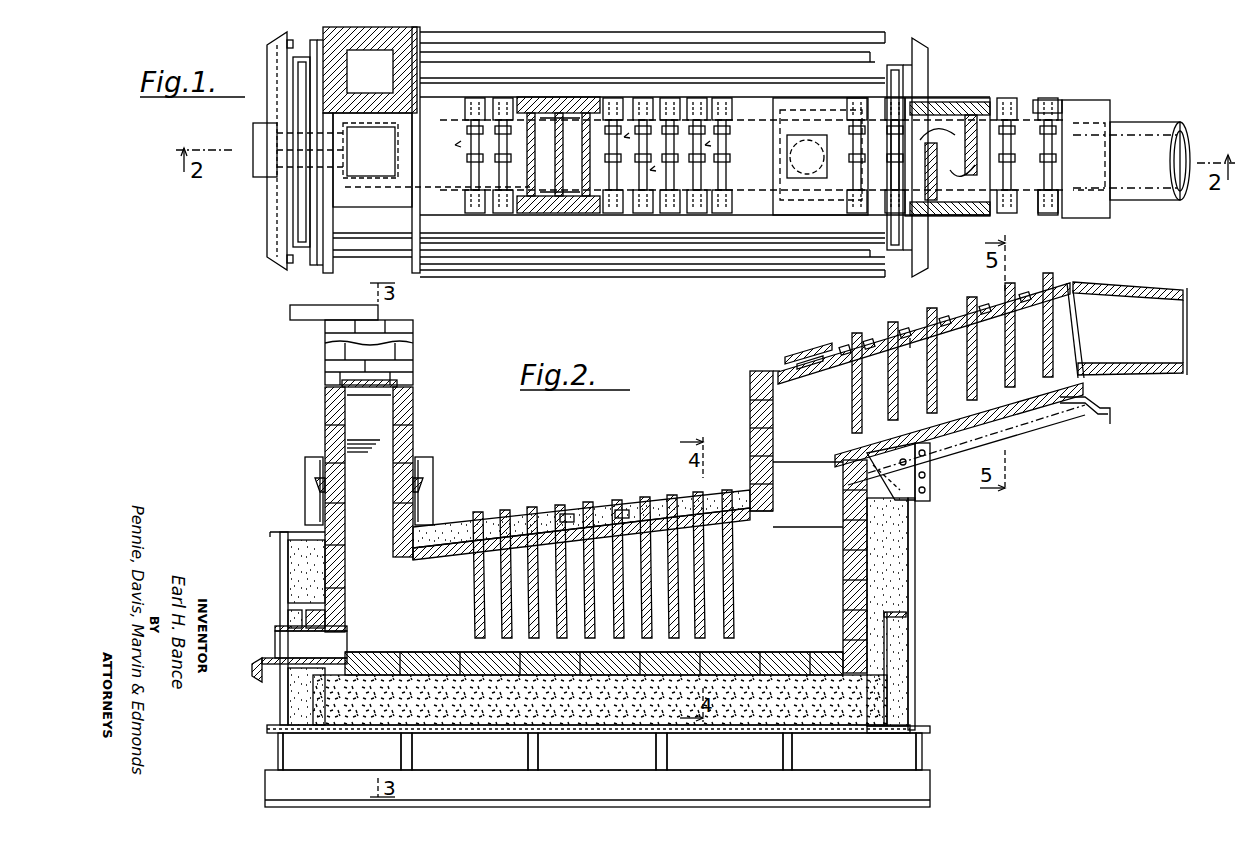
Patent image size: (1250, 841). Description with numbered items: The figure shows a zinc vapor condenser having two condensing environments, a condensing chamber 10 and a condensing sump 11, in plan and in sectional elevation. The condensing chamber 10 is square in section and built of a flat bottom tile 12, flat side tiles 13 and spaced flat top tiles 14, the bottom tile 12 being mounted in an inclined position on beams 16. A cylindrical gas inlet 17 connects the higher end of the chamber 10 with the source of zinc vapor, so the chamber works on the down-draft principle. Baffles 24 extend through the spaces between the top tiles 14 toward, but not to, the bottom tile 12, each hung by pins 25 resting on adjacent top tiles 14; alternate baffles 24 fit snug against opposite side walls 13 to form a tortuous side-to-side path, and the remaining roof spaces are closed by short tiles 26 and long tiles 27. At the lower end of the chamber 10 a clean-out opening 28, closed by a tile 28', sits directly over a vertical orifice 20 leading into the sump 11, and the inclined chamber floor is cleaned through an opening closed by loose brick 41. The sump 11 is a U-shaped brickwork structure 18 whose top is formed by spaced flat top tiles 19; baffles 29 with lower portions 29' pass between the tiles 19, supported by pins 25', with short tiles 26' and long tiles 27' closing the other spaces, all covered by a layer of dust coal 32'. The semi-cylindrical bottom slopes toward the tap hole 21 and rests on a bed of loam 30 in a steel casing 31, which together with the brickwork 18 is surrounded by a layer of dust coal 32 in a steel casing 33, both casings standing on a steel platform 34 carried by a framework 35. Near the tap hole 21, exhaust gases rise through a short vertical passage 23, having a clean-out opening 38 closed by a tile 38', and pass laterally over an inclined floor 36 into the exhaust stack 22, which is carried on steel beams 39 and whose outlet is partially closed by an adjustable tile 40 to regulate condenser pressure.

In FIG. 2, the condensing chamber 10 is at (801, 393).
In FIG. 1, the condensing sump 11 is at (550, 200).
In FIG. 2, the condensing sump 11 is at (594, 610).
In FIG. 1, the flat bottom tile 12 is at (950, 98).
In FIG. 2, the flat bottom tile 12 is at (1010, 410).
In FIG. 1, the flat side tiles 13 is at (938, 103).
In FIG. 1, the flat top tiles 14 is at (985, 200).
In FIG. 2, the flat top tiles 14 is at (911, 357).
In FIG. 2, the beams 16 is at (1058, 410).
In FIG. 1, the gas inlet 17 is at (1140, 130).
In FIG. 2, the gas inlet 17 is at (1140, 300).
In FIG. 1, the brickwork structure 18 is at (585, 105).
In FIG. 2, the brickwork structure 18 is at (745, 655).
In FIG. 1, the flat top tiles 19 is at (700, 205).
In FIG. 2, the flat top tiles 19 is at (598, 518).
In FIG. 2, the vertical orifice 20 is at (796, 494).
In FIG. 1, the tap hole 21 is at (290, 128).
In FIG. 2, the tap hole 21 is at (300, 640).
In FIG. 1, the exhaust stack 22 is at (385, 78).
In FIG. 2, the exhaust stack 22 is at (395, 353).
In FIG. 2, the vertical passage 23 is at (369, 460).
In FIG. 1, the baffles 24 is at (960, 105).
In FIG. 2, the baffles 24 is at (1010, 370).
In FIG. 1, the pins 25 is at (1038, 140).
In FIG. 2, the pins 25 is at (942, 306).
In FIG. 1, the pins 25' is at (496, 154).
In FIG. 2, the pins 25' is at (607, 491).
In FIG. 1, the short tiles 26 is at (1056, 88).
In FIG. 1, the short tiles 26' is at (605, 145).
In FIG. 1, the long tiles 27 is at (1060, 217).
In FIG. 1, the long tiles 27' is at (614, 163).
In FIG. 1, the clean-out opening 28 is at (810, 156).
In FIG. 2, the clean-out opening 28 is at (924, 342).
In FIG. 1, the tile 28' is at (788, 160).
In FIG. 2, the tile 28' is at (805, 343).
In FIG. 1, the baffles 29 is at (523, 145).
In FIG. 2, the baffles 29 is at (582, 564).
In FIG. 1, the lower portion 29' is at (493, 145).
In FIG. 2, the bed of loam 30 is at (845, 700).
In FIG. 1, the steel casing 31 is at (640, 245).
In FIG. 2, the steel casing 31 is at (890, 670).
In FIG. 2, the layer of dust coal 32 is at (917, 612).
In FIG. 2, the layer of dust coal 32' is at (581, 506).
In FIG. 1, the steel casing 33 is at (700, 262).
In FIG. 2, the steel casing 33 is at (915, 635).
In FIG. 2, the steel platform 34 is at (845, 738).
In FIG. 2, the framework 35 is at (925, 789).
In FIG. 2, the floor 36 is at (380, 442).
In FIG. 1, the clean-out opening 38 is at (372, 161).
In FIG. 2, the clean-out opening 38 is at (388, 505).
In FIG. 1, the tile 38' is at (370, 176).
In FIG. 2, the tile 38' is at (337, 386).
In FIG. 1, the steel beams 39 is at (325, 218).
In FIG. 2, the steel beams 39 is at (316, 484).
In FIG. 2, the adjustable tile 40 is at (302, 306).
In FIG. 2, the loose brick 41 is at (748, 448).